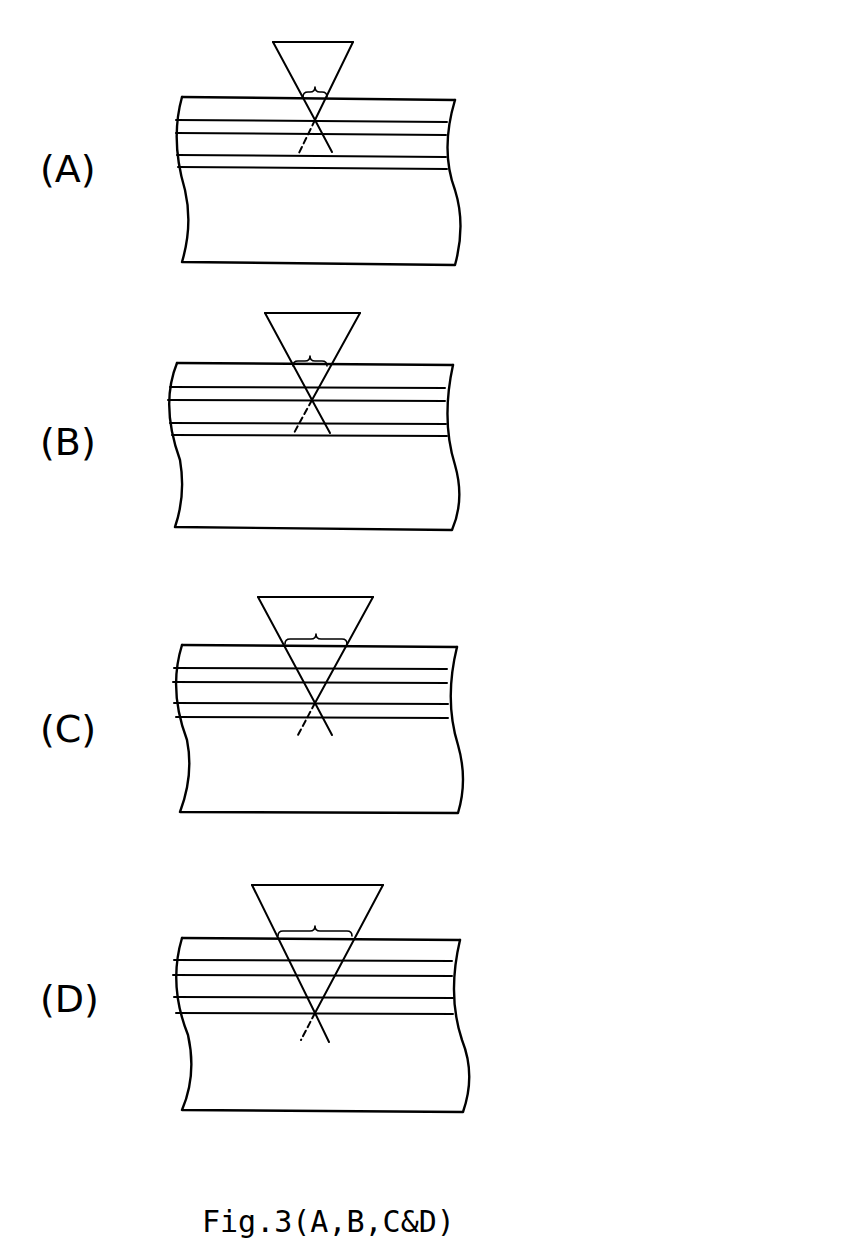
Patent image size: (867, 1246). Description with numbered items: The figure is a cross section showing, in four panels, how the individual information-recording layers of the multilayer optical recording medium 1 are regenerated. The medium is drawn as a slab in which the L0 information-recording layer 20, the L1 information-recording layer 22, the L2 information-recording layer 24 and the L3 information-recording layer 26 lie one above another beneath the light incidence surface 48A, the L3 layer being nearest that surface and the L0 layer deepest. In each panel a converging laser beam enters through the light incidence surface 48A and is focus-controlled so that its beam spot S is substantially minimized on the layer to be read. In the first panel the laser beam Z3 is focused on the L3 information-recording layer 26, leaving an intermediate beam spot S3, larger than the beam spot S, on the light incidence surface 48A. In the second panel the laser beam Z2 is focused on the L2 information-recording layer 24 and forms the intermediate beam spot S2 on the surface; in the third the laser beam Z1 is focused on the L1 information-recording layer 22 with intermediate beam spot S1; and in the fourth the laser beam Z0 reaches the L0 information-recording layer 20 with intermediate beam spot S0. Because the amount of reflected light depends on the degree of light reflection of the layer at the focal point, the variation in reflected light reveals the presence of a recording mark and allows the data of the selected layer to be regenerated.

The multilayer optical recording medium 1 is at (465, 75).
The L0 information-recording layer 20 is at (433, 173).
The L1 information-recording layer 22 is at (432, 155).
The L2 information-recording layer 24 is at (432, 137).
The L3 information-recording layer 26 is at (433, 118).
The medium-facing surface 48A is at (388, 98).
The beam spot S is at (313, 122).
The intermediate beam spot S0 is at (315, 918).
The intermediate beam spot S1 is at (316, 627).
The intermediate beam spot S2 is at (311, 348).
The intermediate beam spot S3 is at (317, 78).
The laser beam Z0 is at (317, 937).
The laser beam Z1 is at (315, 636).
The laser beam Z2 is at (312, 343).
The laser beam Z3 is at (313, 66).